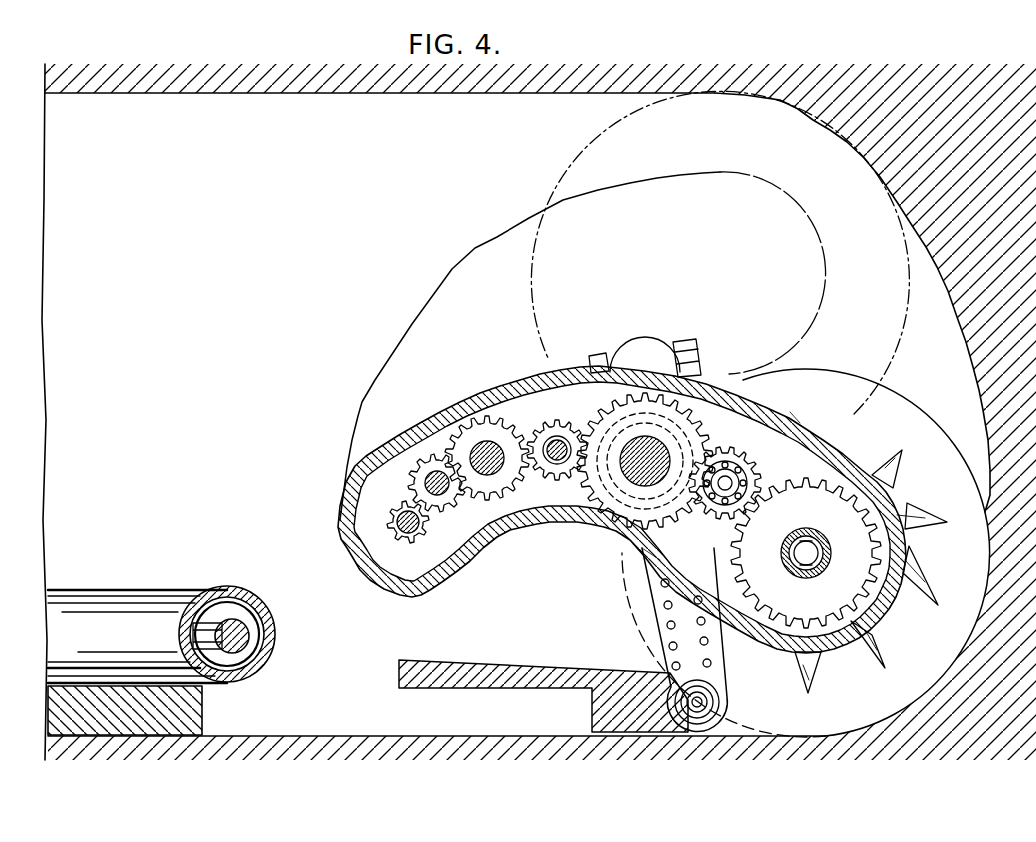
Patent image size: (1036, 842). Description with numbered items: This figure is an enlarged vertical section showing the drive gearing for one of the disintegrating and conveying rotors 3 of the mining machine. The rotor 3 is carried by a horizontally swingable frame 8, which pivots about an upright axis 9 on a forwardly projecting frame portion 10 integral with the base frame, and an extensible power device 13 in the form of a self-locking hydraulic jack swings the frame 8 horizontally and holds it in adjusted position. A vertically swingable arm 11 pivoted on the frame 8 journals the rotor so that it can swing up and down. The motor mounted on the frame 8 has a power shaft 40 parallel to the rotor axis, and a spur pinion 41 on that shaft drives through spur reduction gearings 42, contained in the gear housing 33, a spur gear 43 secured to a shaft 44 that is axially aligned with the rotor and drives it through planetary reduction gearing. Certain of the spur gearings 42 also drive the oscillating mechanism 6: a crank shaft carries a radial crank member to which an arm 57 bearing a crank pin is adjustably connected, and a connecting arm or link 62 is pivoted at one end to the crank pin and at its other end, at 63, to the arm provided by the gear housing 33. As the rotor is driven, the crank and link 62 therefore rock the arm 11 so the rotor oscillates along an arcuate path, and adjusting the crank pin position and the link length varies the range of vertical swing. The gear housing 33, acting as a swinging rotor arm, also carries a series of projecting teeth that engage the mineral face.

The disintegrating and conveying rotor 3 is at (610, 124).
The oscillating mechanism 6 is at (679, 639).
The horizontally swingable rotor frame 8 is at (500, 672).
The upright pivot axis 9 is at (697, 702).
The forwardly projecting frame portion 10 is at (183, 713).
The vertically swingable arm 11 is at (493, 239).
The extensible power device 13 is at (148, 608).
The gear housing 33 is at (790, 412).
The motor power shaft 40 is at (408, 535).
The spur pinion 41 is at (420, 540).
The spur reduction gearings 42 is at (590, 508).
The spur gear 43 is at (807, 510).
The shaft 44 is at (827, 548).
The crank arm 57 is at (655, 355).
The connecting arm or link 62 is at (652, 563).
The pivot connection 63 is at (707, 700).